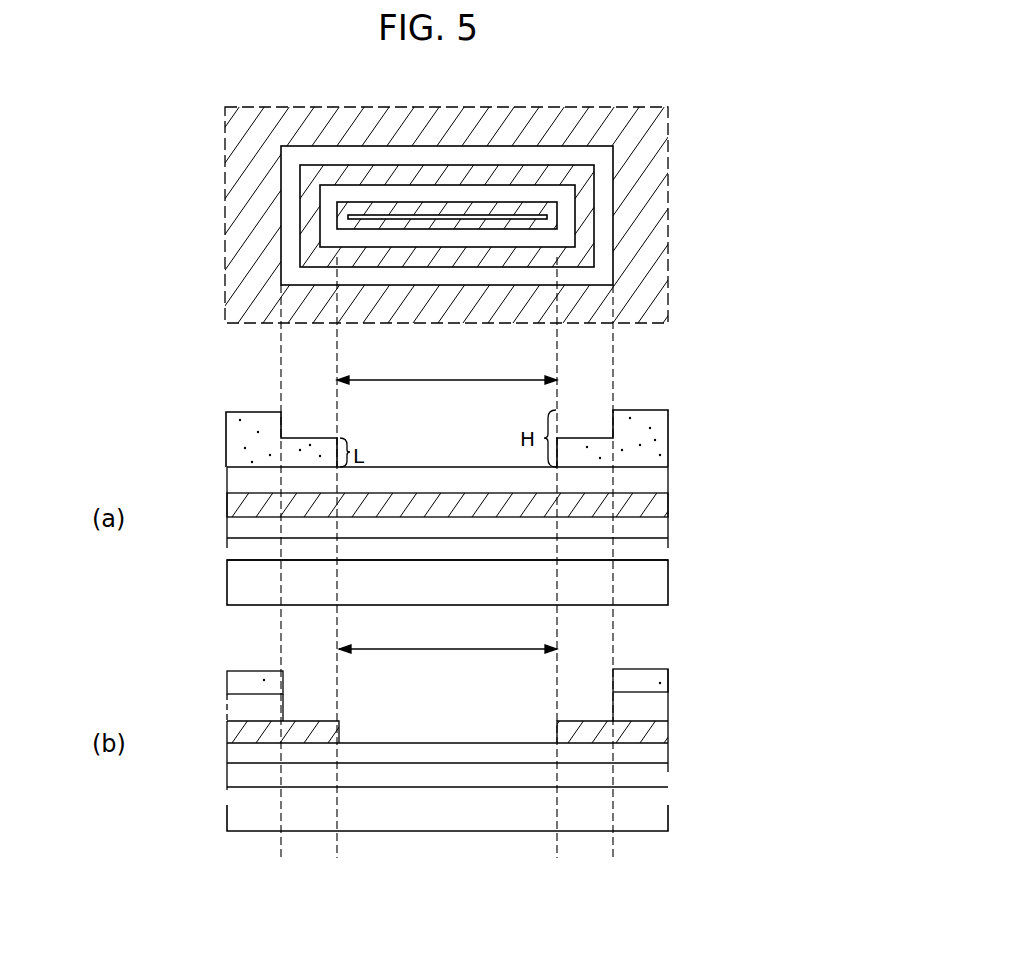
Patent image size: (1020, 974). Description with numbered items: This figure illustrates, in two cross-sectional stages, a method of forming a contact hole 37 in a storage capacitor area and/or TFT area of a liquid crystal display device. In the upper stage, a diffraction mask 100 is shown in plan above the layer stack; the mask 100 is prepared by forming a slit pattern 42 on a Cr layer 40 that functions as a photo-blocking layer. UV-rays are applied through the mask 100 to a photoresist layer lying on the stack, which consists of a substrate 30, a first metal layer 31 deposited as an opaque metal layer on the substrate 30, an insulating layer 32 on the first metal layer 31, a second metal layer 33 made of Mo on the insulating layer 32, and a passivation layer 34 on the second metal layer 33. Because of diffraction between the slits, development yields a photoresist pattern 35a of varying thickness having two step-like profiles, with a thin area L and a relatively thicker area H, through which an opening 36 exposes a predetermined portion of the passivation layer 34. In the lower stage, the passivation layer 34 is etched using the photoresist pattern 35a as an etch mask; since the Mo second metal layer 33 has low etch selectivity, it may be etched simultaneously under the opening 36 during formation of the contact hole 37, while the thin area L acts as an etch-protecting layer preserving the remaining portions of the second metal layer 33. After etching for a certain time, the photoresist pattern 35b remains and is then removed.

The diffraction mask 100 is at (451, 215).
The Cr layer 40 is at (660, 170).
The slit pattern 42 is at (605, 243).
The opening 36 is at (447, 502).
The photoresist pattern 35a is at (665, 432).
The photoresist pattern 35b is at (228, 684).
The passivation layer 34 is at (660, 478).
The second metal layer 33 is at (230, 507).
The insulating layer 32 is at (660, 527).
The first metal layer 31 is at (237, 553).
The substrate 30 is at (660, 580).
The contact hole 37 is at (450, 727).